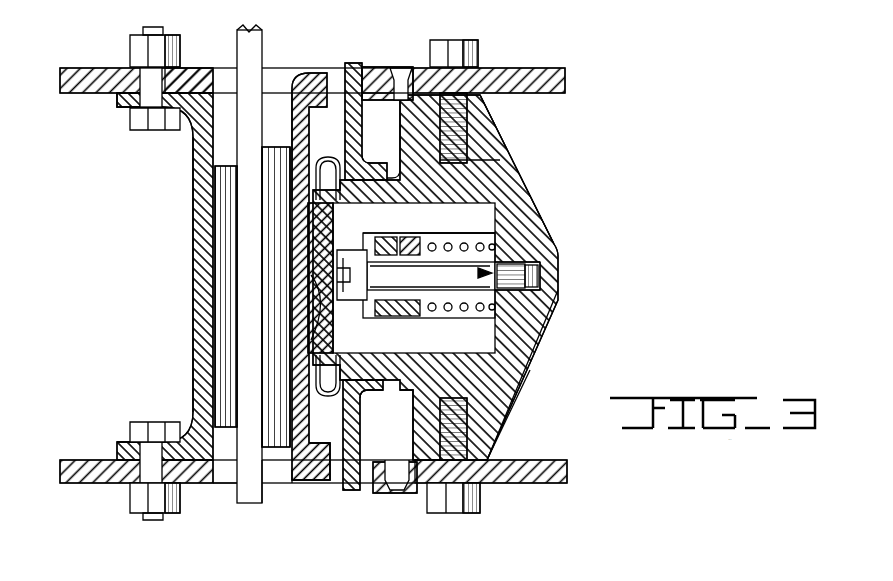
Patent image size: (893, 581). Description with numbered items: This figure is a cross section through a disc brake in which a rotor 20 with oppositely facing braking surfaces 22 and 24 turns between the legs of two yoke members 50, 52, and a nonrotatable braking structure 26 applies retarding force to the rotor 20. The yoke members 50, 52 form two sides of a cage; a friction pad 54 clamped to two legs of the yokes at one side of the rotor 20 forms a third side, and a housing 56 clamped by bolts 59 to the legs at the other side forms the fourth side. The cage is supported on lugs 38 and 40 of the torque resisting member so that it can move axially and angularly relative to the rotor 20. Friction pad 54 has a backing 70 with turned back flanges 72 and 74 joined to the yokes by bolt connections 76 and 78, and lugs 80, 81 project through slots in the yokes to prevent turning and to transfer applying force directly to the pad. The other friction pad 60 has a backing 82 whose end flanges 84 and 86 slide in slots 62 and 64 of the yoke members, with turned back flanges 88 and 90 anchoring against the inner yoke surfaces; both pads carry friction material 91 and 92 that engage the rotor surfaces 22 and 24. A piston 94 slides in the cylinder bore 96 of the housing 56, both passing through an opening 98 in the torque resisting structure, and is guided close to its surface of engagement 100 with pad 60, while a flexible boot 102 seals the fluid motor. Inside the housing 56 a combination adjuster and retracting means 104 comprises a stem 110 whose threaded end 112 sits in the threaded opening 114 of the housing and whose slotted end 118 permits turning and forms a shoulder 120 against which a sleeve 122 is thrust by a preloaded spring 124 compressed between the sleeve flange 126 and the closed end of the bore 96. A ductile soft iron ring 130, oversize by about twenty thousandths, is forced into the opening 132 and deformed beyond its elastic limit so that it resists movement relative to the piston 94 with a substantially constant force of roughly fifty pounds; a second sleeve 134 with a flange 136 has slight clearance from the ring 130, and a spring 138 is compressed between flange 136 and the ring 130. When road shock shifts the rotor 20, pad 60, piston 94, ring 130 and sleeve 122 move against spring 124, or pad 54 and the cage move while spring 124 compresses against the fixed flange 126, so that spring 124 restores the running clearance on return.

The rotor 20 is at (250, 503).
The braking surface 22 is at (264, 495).
The braking surface 24 is at (236, 485).
The nonrotatable braking structure 26 is at (505, 434).
The lug 38 is at (350, 492).
The lug 40 is at (400, 70).
The yoke member 50 is at (522, 472).
The yoke member 52 is at (555, 82).
The friction pad 54 is at (205, 290).
The housing 56 is at (505, 362).
The bolt 59 is at (458, 50).
The friction pad 60 is at (285, 375).
The slot 62 is at (370, 480).
The slot 64 is at (385, 68).
The backing 70 is at (200, 150).
The turned back flange 72 is at (125, 102).
The turned back flange 74 is at (120, 448).
The bolt connection 76 is at (150, 50).
The bolt connection 78 is at (148, 498).
The lug 80 is at (205, 480).
The lug 81 is at (196, 82).
The backing 82 is at (296, 130).
The end flange 84 is at (289, 480).
The end flange 86 is at (312, 78).
The turned back flange 88 is at (320, 483).
The turned back flange 90 is at (353, 72).
The friction material 91 is at (275, 200).
The friction material 92 is at (225, 325).
The piston 94 is at (520, 398).
The cylinder bore 96 is at (430, 235).
The opening 98 is at (368, 165).
The surface of engagement 100 is at (328, 397).
The flexible boot 102 is at (322, 158).
The combination adjuster and retracting means 104 is at (497, 268).
The stem 110 is at (520, 318).
The threaded end 112 is at (540, 300).
The threaded opening 114 is at (545, 274).
The slotted end 118 is at (335, 258).
The shoulder 120 is at (373, 393).
The sleeve 122 is at (414, 278).
The preloaded spring 124 is at (470, 243).
The flange 126 is at (455, 185).
The soft iron ring 130 is at (415, 468).
The opening 132 is at (492, 215).
The second sleeve 134 is at (369, 260).
The flange 136 is at (380, 240).
The spring 138 is at (405, 240).